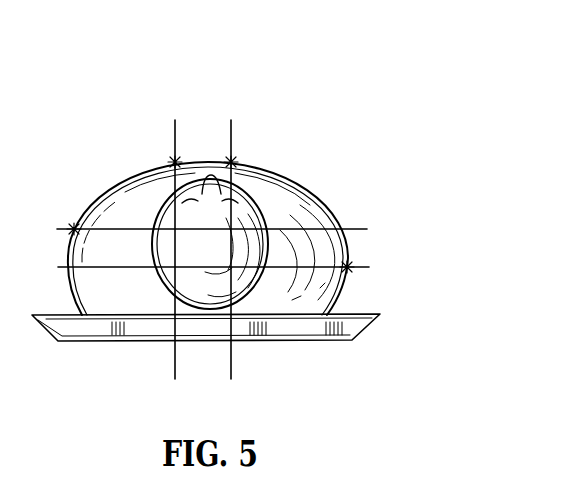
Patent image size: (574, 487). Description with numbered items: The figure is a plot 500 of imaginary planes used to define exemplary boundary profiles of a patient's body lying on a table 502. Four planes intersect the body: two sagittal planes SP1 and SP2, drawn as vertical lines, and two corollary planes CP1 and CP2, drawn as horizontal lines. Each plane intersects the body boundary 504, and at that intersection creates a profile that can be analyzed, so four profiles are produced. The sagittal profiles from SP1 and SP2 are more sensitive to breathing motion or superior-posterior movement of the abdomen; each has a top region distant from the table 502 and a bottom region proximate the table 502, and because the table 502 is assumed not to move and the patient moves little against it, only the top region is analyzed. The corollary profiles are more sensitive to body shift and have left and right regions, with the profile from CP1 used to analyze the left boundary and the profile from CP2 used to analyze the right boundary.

The plot of imaginary planes 500 is at (313, 95).
The table 502 is at (355, 325).
The body boundary 504 is at (307, 185).
The first sagittal plane SP1 is at (174, 238).
The second sagittal plane SP2 is at (230, 238).
The first corollary plane CP1 is at (197, 219).
The second corollary plane CP2 is at (237, 265).